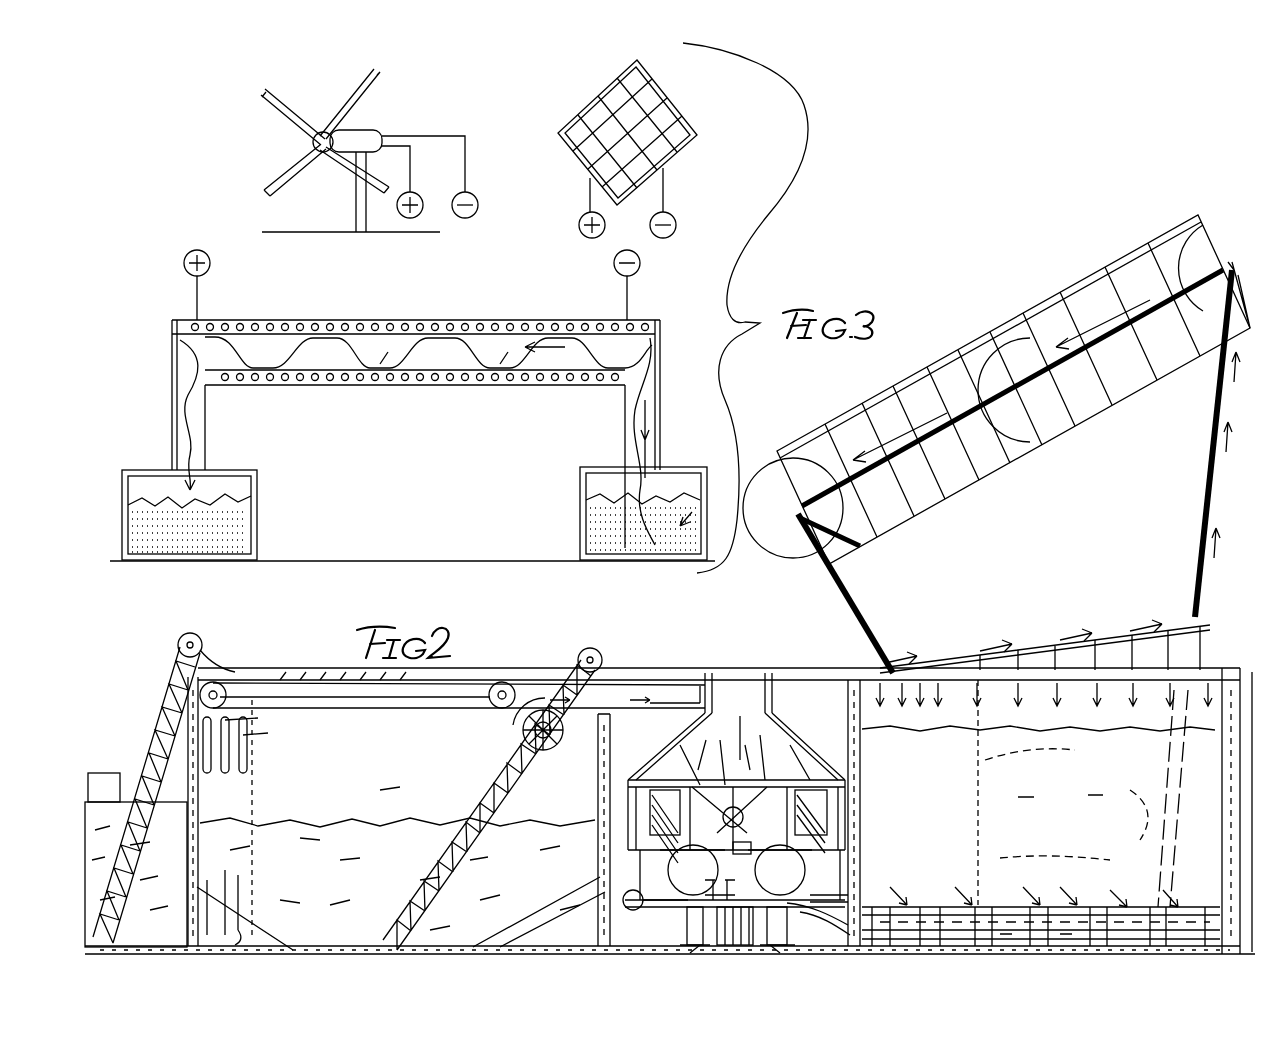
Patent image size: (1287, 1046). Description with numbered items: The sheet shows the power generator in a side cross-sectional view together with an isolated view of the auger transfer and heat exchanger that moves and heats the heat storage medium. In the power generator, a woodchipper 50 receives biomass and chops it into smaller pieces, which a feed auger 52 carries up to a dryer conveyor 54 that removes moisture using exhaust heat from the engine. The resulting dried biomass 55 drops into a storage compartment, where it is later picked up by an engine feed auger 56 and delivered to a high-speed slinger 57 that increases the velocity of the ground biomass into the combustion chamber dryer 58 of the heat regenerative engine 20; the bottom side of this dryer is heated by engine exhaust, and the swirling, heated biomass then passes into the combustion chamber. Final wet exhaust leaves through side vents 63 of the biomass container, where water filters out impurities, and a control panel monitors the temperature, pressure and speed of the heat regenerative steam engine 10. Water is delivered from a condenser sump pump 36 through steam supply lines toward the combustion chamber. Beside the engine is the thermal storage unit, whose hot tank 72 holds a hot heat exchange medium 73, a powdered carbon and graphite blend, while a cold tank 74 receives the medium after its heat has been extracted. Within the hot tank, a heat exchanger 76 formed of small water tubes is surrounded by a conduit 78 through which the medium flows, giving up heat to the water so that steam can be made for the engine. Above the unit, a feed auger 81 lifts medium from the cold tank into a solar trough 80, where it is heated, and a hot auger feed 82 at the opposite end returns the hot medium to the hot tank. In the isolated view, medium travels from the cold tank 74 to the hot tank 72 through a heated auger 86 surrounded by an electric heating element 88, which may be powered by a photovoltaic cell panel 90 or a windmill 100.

In FIG. 2, the heat regenerative steam engine 10 is at (788, 628).
In FIG. 2, the heat regenerative engine 20 is at (828, 744).
In FIG. 2, the condenser sump pump 36 is at (727, 892).
In FIG. 2, the woodchipper 50 is at (113, 765).
In FIG. 2, the feed auger 52 is at (166, 710).
In FIG. 2, the dryer conveyor 54 is at (442, 678).
In FIG. 2, the dried biomass 55 is at (407, 850).
In FIG. 2, the engine feed auger 56 is at (505, 792).
In FIG. 2, the high-speed slinger 57 is at (558, 736).
In FIG. 2, the combustion chamber dryer 58 is at (790, 744).
In FIG. 2, the side vents 63 is at (245, 770).
In FIG. 3, the hot tank 72 is at (257, 497).
In FIG. 3, the heat exchange medium 73 is at (488, 322).
In FIG. 2, the heat exchange medium 73 is at (1077, 932).
In FIG. 3, the cold tank 74 is at (580, 491).
In FIG. 2, the heat exchanger 76 is at (932, 918).
In FIG. 2, the conduit 78 is at (1017, 922).
In FIG. 3, the solar trough 80 is at (1040, 304).
In FIG. 3, the feed auger 81 is at (1214, 490).
In FIG. 2, the feed auger 81 is at (1176, 786).
In FIG. 3, the hot auger feed 82 is at (870, 598).
In FIG. 3, the heated auger 86 is at (448, 322).
In FIG. 3, the electric heating element 88 is at (412, 382).
In FIG. 3, the photovoltaic cell panel 90 is at (700, 127).
In FIG. 3, the windmill 100 is at (380, 124).